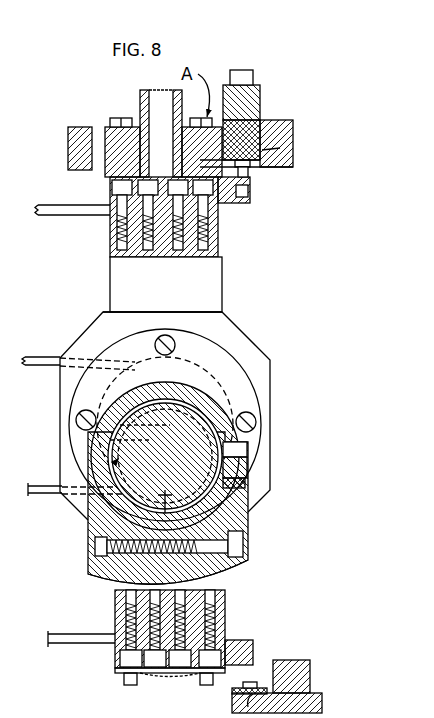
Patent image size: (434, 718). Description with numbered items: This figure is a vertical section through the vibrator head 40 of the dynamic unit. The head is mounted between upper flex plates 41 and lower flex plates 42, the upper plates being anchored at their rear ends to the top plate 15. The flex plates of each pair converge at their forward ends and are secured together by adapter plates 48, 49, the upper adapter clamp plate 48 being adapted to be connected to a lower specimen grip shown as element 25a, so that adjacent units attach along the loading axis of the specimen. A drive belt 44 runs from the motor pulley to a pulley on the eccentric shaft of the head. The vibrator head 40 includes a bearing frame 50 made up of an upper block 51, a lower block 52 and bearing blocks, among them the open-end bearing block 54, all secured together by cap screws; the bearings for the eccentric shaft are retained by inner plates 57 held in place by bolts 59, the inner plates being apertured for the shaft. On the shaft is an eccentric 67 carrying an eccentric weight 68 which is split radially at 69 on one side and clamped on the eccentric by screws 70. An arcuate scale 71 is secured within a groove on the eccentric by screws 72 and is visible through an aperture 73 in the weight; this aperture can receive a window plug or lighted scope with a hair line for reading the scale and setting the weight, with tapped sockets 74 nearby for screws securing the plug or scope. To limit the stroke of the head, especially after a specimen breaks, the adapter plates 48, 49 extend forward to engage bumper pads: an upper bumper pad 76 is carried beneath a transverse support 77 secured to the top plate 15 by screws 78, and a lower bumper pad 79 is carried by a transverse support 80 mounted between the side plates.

The top plate 15 is at (279, 116).
The shaft 25a is at (140, 102).
The vibrator head 40 is at (226, 295).
The upper flex plates 41 is at (62, 210).
The lower flex plates 42 is at (85, 627).
The drive belt 44 is at (50, 358).
The upper adapter clamp plate 48 is at (247, 188).
The adapter plate 49 is at (250, 644).
The bearing frame 50 is at (273, 380).
The upper block 51 is at (216, 273).
The lower block 52 is at (224, 612).
The open-end bearing block 54 is at (103, 316).
The inner plates 57 is at (80, 404).
The bolts 59 is at (172, 347).
The eccentric 67 is at (216, 473).
The eccentric weight 68 is at (232, 515).
The radial split 69 is at (226, 586).
The screws 70 is at (236, 546).
The arcuate scale 71 is at (188, 400).
The screws 72 is at (226, 463).
The aperture 73 is at (240, 449).
The tapped sockets 74 is at (240, 486).
The upper bumper pad 76 is at (262, 150).
The transverse support 77 is at (258, 97).
The screws 78 is at (246, 76).
The lower bumper pad 79 is at (238, 692).
The transverse support 80 is at (309, 682).